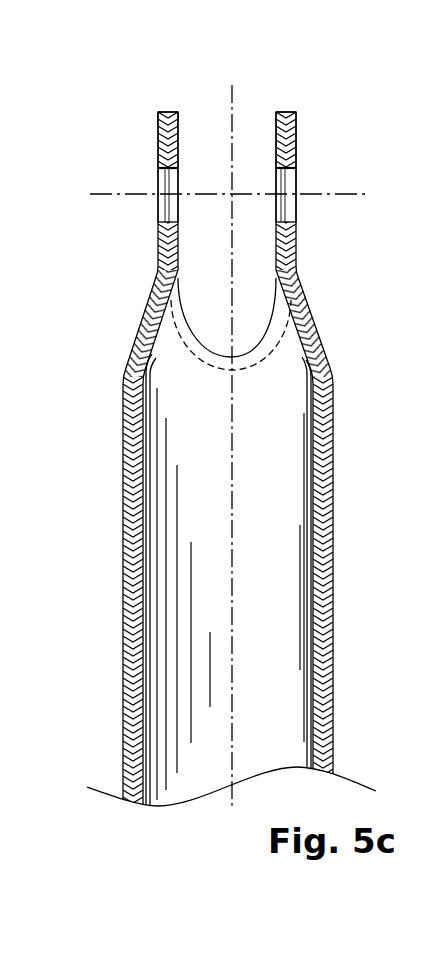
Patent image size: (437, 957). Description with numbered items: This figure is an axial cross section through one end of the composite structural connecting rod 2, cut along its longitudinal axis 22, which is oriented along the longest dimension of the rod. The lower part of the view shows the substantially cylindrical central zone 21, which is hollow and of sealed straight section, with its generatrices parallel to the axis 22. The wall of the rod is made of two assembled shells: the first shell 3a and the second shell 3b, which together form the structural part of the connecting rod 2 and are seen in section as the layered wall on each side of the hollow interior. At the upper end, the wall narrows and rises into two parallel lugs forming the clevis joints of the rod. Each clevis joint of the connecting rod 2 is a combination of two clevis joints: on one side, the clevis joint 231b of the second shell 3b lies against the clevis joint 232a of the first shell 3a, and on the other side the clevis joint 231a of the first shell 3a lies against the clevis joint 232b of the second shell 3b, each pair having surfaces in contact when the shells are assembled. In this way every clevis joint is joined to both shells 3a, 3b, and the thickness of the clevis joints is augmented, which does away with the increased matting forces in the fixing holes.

The structural connecting rod 2 is at (91, 323).
The central zone 21 is at (356, 396).
The axis 22 is at (232, 93).
The clevis joint of the first shell 231a is at (287, 132).
The clevis joint of the second shell 231b is at (173, 132).
The clevis joint of the first shell 232a is at (167, 150).
The clevis joint of the second shell 232b is at (290, 157).
The first shell 3a is at (128, 476).
The second shell 3b is at (140, 517).